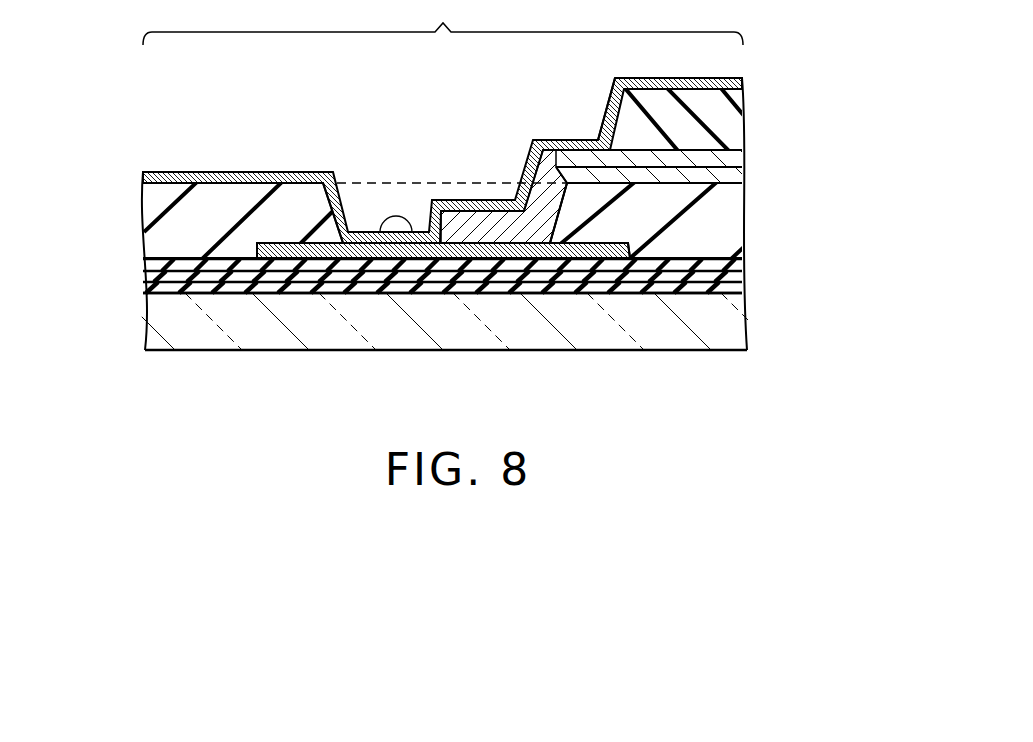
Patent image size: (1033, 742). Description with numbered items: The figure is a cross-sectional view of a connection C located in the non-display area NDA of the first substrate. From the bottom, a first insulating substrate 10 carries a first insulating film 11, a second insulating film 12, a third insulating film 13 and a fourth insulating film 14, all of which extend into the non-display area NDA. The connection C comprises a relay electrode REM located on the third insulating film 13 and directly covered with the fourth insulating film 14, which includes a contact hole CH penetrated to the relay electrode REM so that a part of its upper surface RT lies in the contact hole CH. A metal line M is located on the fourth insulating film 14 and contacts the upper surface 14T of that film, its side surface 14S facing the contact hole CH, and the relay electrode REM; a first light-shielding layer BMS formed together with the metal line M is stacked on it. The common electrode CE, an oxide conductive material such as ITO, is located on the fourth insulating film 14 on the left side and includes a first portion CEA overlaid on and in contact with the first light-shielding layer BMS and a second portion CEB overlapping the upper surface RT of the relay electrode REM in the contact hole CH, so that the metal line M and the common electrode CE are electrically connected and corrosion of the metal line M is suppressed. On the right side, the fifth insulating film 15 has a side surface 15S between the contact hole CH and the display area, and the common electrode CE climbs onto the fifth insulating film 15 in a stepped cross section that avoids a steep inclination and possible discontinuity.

The first insulating substrate 10 is at (152, 331).
The first insulating film 11 is at (152, 291).
The second insulating film 12 is at (152, 280).
The third insulating film 13 is at (152, 262).
The fourth insulating film 14 is at (156, 208).
The fifth insulating film 15 is at (728, 124).
The common electrode CE is at (145, 177).
The first portion CEA is at (557, 140).
The second portion CEB is at (365, 231).
The contact hole CH is at (418, 181).
The connection C is at (482, 138).
The non-display area NDA is at (443, 22).
The side surface 15S is at (603, 113).
The first light-shielding layer BMS is at (735, 161).
The metal line M is at (725, 180).
The upper surface RT is at (412, 233).
The side surface 14S is at (552, 200).
The relay electrode REM is at (573, 258).
The upper surface 14T is at (668, 174).